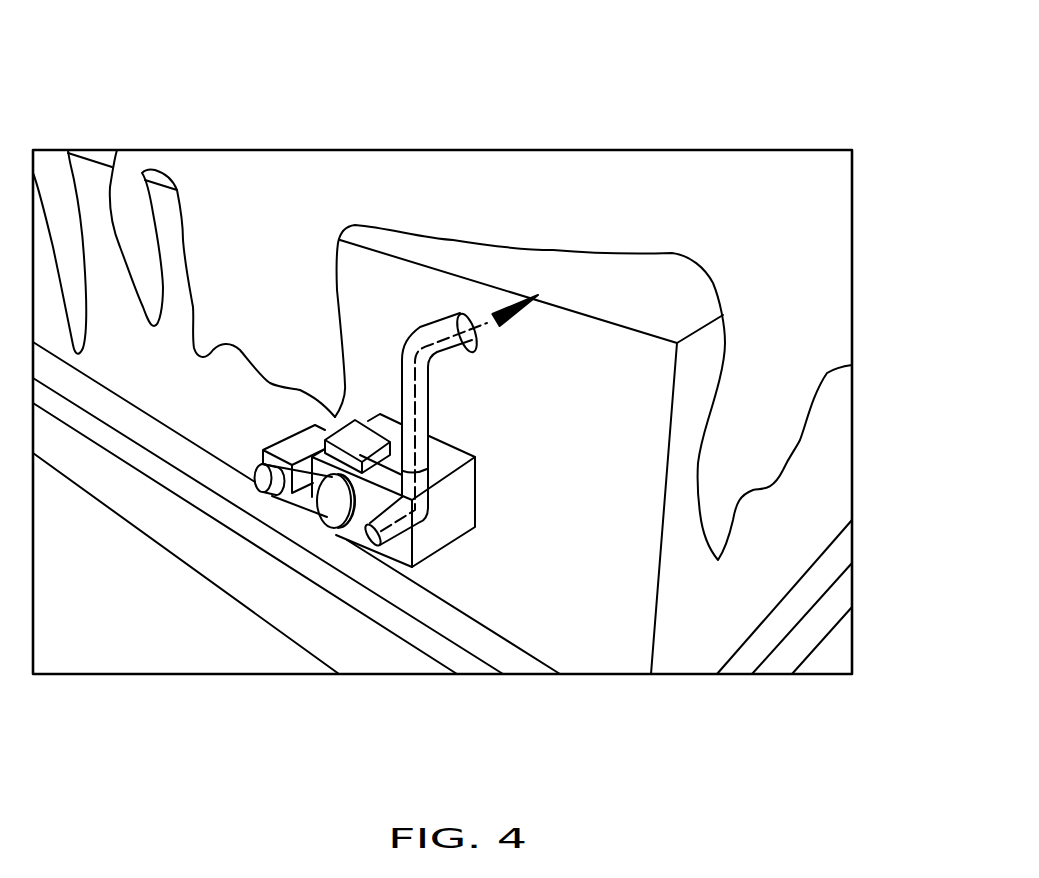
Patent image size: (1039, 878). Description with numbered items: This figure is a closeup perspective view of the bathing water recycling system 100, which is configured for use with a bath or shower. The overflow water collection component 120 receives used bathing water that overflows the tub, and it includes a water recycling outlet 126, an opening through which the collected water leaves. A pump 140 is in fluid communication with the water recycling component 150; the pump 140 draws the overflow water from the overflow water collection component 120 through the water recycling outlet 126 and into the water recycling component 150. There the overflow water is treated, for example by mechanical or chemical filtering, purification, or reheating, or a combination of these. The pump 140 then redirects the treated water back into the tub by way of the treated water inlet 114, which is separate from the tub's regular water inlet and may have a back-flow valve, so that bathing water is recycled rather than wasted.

The bathing water recycling system 100 is at (675, 158).
The treated water inlet 114 is at (472, 353).
The overflow water collection component 120 is at (807, 595).
The water recycling outlet 126 is at (368, 527).
The pump 140 is at (330, 515).
The water recycling component 150 is at (442, 543).